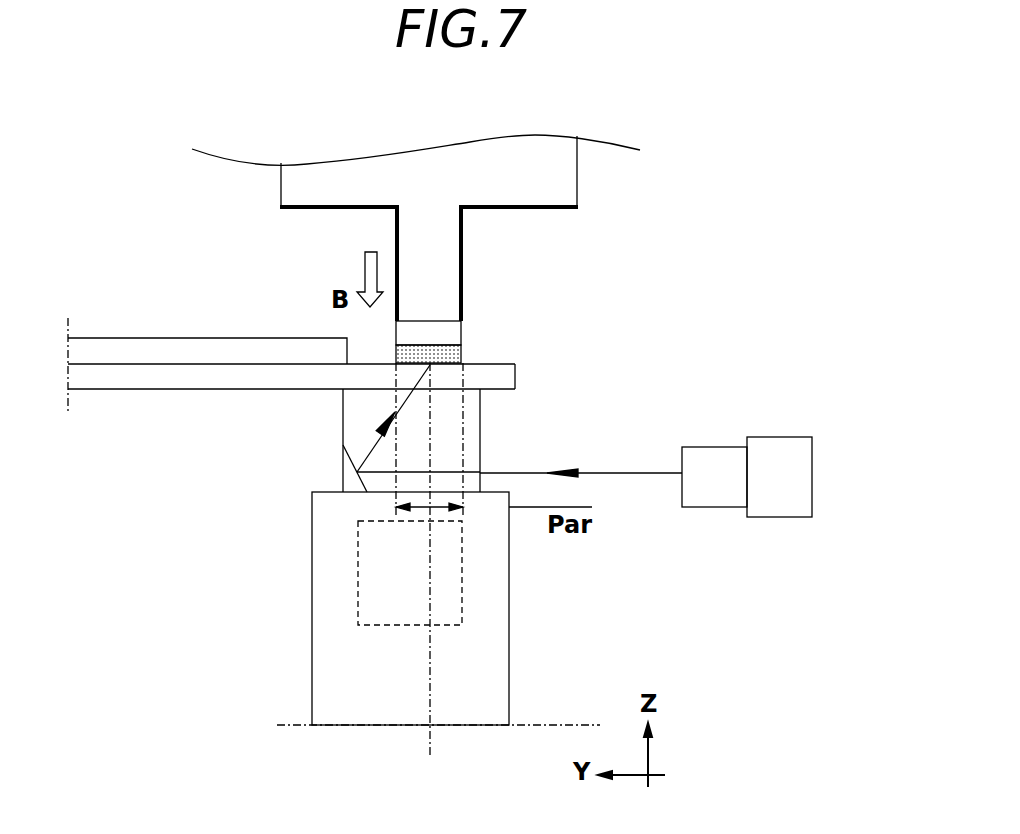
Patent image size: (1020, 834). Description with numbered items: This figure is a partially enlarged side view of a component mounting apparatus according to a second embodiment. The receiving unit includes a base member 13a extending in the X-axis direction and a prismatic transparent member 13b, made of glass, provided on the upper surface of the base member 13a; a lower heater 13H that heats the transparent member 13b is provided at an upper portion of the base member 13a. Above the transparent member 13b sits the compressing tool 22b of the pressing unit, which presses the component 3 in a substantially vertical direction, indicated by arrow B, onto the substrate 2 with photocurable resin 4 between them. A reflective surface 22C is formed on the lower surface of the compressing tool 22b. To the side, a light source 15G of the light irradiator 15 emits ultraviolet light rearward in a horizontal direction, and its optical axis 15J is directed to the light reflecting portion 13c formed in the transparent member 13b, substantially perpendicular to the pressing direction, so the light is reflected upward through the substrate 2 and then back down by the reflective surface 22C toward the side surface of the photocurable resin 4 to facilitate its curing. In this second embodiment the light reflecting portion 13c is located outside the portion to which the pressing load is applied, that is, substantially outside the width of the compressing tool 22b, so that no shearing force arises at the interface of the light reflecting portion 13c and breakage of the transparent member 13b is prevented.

The reflective surface 22C is at (334, 208).
The compressing tool 22b is at (449, 260).
The component 3 is at (457, 332).
The photocurable resin 4 is at (457, 359).
The substrate 2 is at (134, 380).
The transparent member 13b is at (463, 438).
The light reflecting portion 13c is at (348, 461).
The base member 13a is at (323, 663).
The lower heater 13H is at (370, 567).
The laser unit 15 is at (747, 462).
The optical axis 15J is at (625, 472).
The light source 15G is at (713, 502).